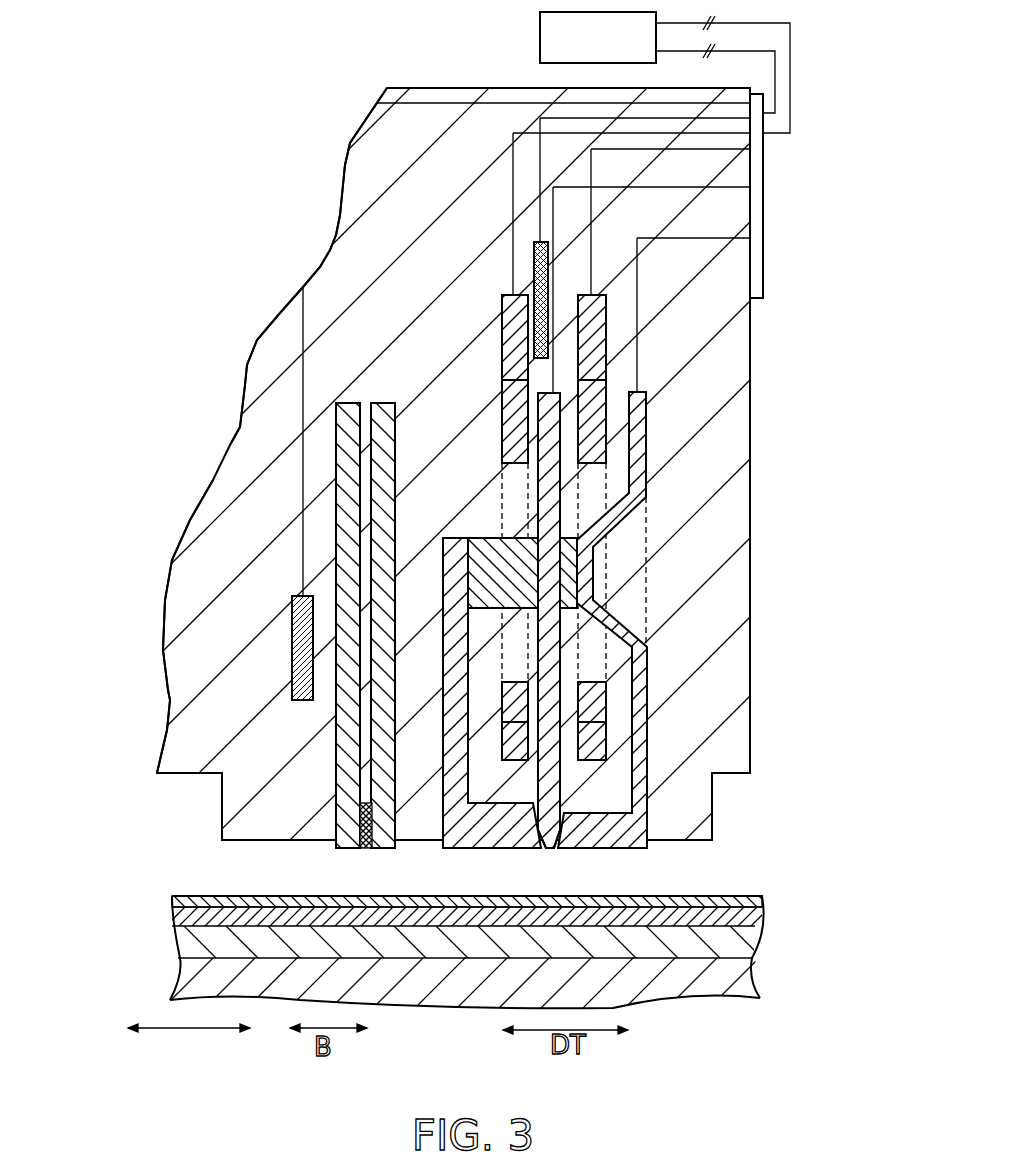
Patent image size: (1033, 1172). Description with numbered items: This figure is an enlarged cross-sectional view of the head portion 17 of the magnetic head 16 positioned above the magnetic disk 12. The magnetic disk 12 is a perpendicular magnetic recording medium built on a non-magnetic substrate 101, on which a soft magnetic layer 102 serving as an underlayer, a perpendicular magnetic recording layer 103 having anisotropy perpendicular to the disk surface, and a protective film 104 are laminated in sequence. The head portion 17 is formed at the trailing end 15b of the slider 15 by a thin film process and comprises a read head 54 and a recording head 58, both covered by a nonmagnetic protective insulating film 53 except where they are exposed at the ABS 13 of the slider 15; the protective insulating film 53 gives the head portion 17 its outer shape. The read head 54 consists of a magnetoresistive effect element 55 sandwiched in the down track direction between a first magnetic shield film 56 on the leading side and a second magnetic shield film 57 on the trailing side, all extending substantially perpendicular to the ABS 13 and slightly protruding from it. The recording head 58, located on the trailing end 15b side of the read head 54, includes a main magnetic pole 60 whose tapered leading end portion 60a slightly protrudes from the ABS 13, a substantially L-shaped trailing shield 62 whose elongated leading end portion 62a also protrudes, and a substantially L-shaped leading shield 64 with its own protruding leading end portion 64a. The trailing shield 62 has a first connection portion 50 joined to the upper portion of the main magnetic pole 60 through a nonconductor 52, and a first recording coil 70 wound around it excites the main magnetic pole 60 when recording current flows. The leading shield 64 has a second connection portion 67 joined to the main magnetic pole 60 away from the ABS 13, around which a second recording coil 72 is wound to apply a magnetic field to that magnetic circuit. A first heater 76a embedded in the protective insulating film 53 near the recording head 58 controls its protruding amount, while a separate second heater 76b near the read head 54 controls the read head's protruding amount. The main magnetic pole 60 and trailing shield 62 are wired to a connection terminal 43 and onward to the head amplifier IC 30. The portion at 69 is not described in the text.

The magnetic disk 12 is at (516, 586).
The ABS 13 is at (188, 774).
The slider 15 is at (190, 700).
The trailing end 15b is at (750, 475).
The magnetic head 16 is at (287, 207).
The head portion 17 is at (273, 387).
The head amplifier IC 30 is at (540, 40).
The connection terminal 43 is at (763, 228).
The first connection portion 50 is at (587, 592).
The nonconductor 52 is at (578, 553).
The protective insulating film 53 is at (750, 406).
The read head 54 is at (516, 586).
The magnetoresistive effect element 55 is at (363, 822).
The first magnetic shield film 56 is at (345, 560).
The second magnetic shield film 57 is at (380, 512).
The recording head 58 is at (447, 273).
The main magnetic pole 60 is at (516, 586).
The leading end portion 60a is at (548, 845).
The trailing shield 62 is at (516, 586).
The leading end portion 62a is at (603, 843).
The leading shield 64 is at (516, 586).
The leading end portion 64a is at (497, 843).
The second connection portion 67 is at (493, 547).
The fixing portion 69 is at (516, 586).
The first recording coil 70 is at (597, 398).
The second recording coil 72 is at (510, 413).
The first heater 76a is at (533, 280).
The second heater 76b is at (302, 643).
The substrate 101 is at (743, 985).
The soft magnetic layer 102 is at (743, 948).
The perpendicular magnetic recording layer 103 is at (748, 918).
The protective film 104 is at (757, 897).